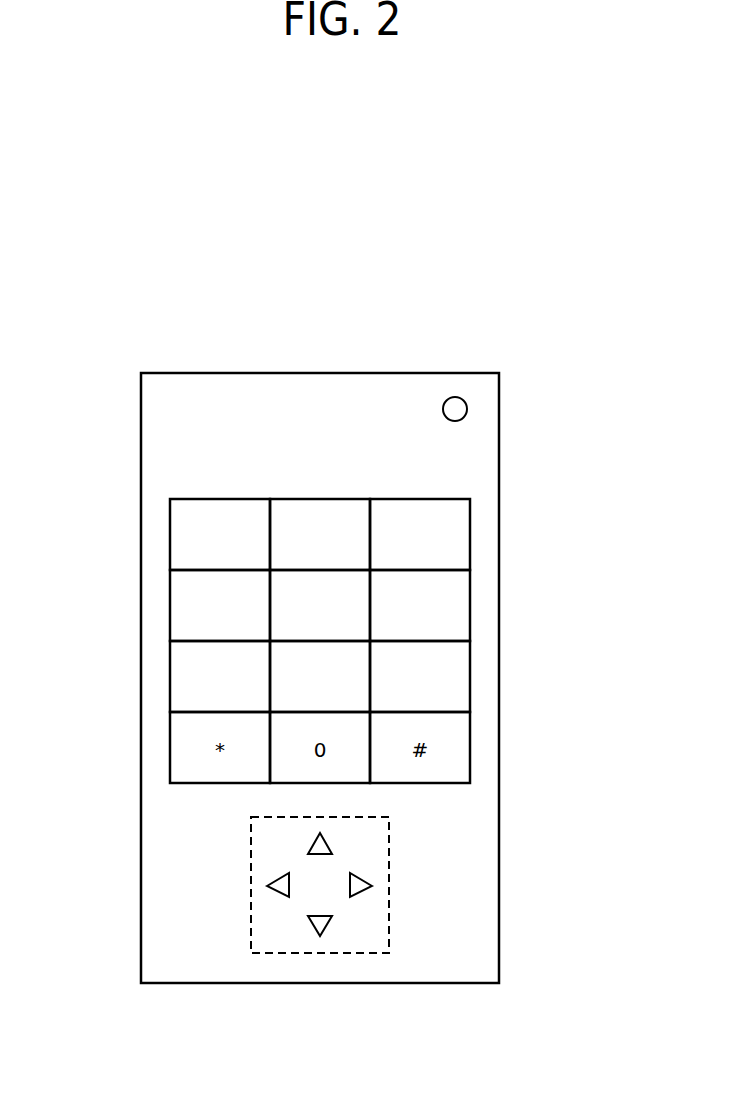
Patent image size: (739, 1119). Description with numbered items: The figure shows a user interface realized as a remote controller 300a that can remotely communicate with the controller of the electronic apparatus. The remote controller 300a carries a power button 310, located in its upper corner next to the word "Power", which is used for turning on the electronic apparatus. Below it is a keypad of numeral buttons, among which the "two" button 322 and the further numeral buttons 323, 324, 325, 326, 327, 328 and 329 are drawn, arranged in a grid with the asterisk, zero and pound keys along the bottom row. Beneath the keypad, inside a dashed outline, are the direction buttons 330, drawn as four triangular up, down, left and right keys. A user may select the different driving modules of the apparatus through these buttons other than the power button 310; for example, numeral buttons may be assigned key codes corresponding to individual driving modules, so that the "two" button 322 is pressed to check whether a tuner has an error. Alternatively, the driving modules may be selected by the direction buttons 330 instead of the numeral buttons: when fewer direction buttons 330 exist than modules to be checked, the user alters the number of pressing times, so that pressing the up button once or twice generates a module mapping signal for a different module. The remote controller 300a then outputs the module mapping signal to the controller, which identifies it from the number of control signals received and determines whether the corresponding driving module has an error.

The remote controller 300a is at (442, 331).
The power button 310 is at (467, 409).
The "2" button 322 is at (363, 563).
The numeral button 323 is at (182, 540).
The numeral button 324 is at (182, 610).
The numeral button 325 is at (363, 627).
The numeral button 326 is at (462, 610).
The numeral button 327 is at (182, 680).
The numeral button 328 is at (363, 700).
The numeral button 329 is at (462, 678).
The direction buttons 330 is at (251, 887).